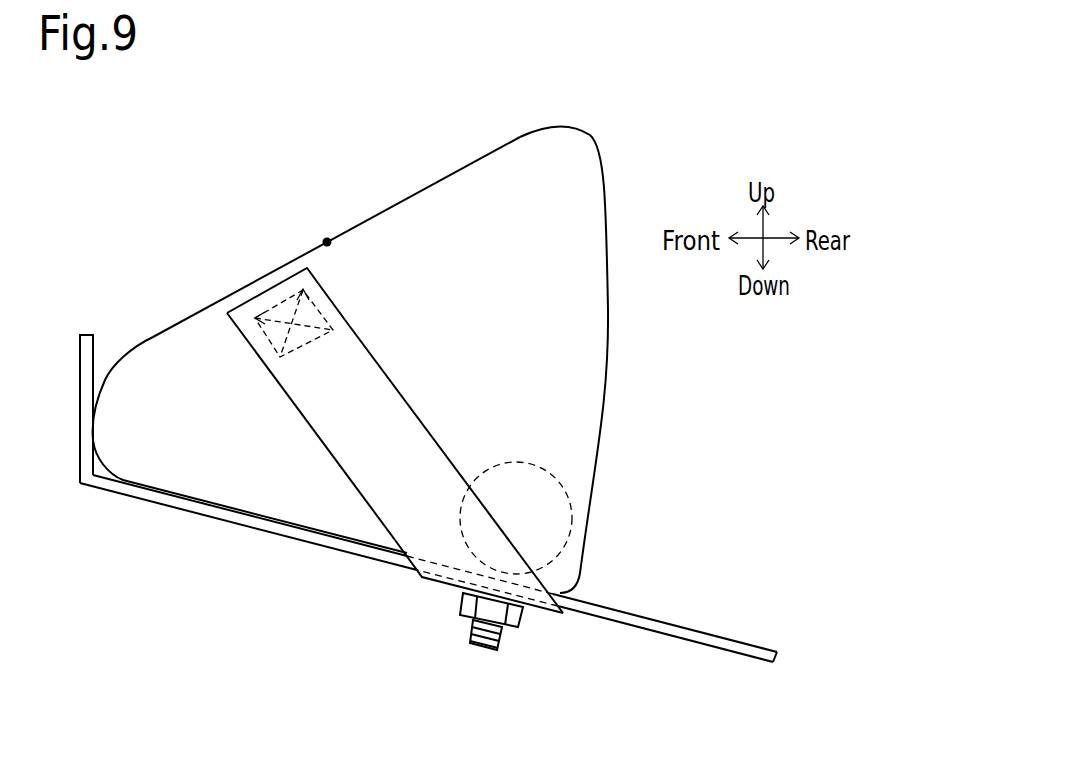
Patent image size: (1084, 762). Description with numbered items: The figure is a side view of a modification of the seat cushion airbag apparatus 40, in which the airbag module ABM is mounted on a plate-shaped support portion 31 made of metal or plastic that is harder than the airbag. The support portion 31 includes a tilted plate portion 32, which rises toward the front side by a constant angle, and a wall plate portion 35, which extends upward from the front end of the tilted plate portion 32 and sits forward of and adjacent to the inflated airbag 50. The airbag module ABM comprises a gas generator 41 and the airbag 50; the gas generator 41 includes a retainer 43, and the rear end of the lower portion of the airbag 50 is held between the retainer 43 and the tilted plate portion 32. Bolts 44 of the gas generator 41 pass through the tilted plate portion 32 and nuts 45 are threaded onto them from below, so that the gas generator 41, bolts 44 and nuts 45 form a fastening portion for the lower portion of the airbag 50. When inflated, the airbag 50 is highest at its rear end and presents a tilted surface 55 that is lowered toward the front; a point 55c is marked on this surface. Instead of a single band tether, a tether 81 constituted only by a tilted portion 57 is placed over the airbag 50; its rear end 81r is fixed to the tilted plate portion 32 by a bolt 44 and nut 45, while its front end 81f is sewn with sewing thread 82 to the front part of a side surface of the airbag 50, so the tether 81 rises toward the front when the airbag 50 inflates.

The support portion 31 is at (140, 546).
The tilted plate portion 32 is at (120, 487).
The wall plate portion 35 is at (87, 440).
The airbag apparatus 40 is at (277, 184).
The gas generator 41 is at (494, 454).
The retainer 43 is at (520, 462).
The bolt 44 is at (500, 650).
The nut 45 is at (524, 616).
The airbag 50 is at (608, 318).
The tilted surface 55 is at (412, 190).
The airbag edge point 55c is at (328, 238).
The tilted portion 57 is at (386, 459).
The tether 81 is at (378, 367).
The front end 81f is at (345, 302).
The rear end 81r is at (445, 586).
The sewing thread 82 is at (262, 345).
The airbag module ABM is at (666, 439).